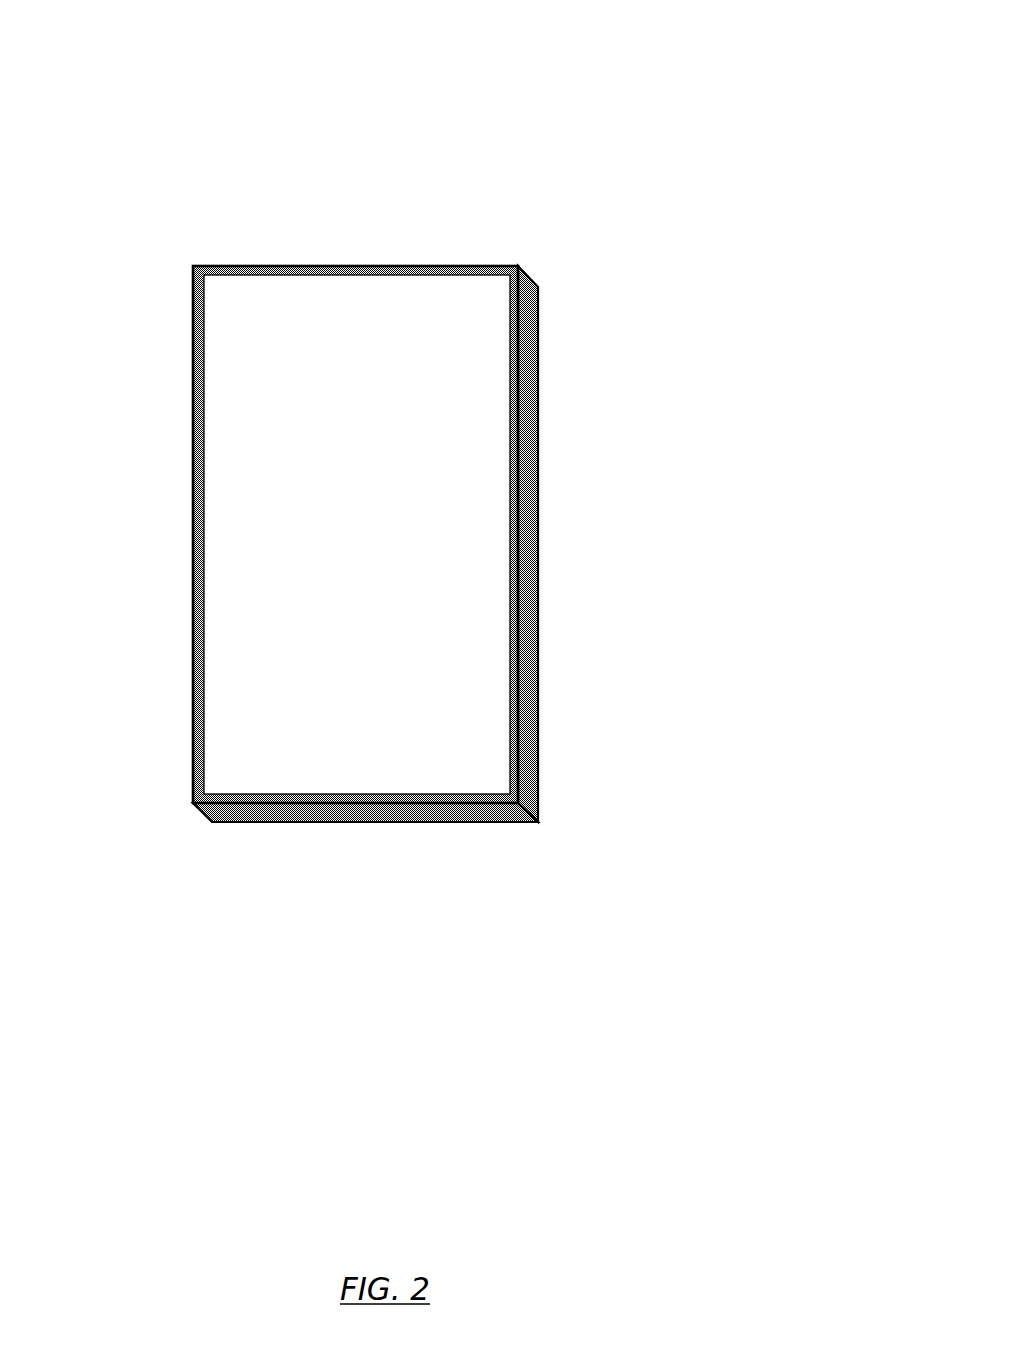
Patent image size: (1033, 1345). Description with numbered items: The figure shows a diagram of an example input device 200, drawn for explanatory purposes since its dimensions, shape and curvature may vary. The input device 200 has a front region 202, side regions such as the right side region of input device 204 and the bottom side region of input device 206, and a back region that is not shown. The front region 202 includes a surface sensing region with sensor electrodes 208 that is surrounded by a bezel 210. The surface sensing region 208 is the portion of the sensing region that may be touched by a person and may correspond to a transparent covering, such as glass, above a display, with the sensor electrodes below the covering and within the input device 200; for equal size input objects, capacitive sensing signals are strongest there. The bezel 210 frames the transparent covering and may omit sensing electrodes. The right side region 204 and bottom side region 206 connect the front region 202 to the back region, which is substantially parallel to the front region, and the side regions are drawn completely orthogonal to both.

The input device 200 is at (389, 446).
The front region 202 is at (381, 500).
The right side region of input device 204 is at (629, 544).
The bottom side region of input device 206 is at (453, 841).
The surface sensing region with sensor electrodes 208 is at (378, 515).
The bezel 210 is at (272, 534).